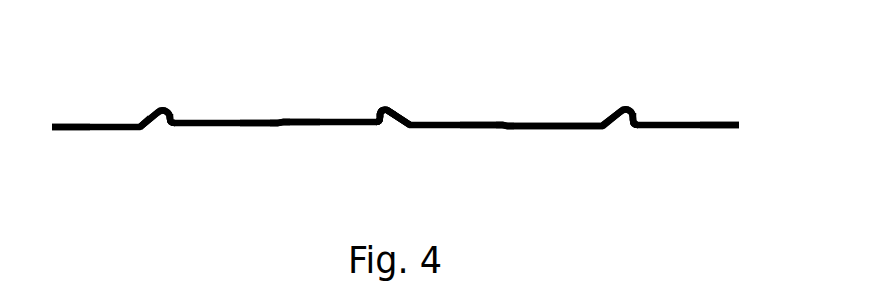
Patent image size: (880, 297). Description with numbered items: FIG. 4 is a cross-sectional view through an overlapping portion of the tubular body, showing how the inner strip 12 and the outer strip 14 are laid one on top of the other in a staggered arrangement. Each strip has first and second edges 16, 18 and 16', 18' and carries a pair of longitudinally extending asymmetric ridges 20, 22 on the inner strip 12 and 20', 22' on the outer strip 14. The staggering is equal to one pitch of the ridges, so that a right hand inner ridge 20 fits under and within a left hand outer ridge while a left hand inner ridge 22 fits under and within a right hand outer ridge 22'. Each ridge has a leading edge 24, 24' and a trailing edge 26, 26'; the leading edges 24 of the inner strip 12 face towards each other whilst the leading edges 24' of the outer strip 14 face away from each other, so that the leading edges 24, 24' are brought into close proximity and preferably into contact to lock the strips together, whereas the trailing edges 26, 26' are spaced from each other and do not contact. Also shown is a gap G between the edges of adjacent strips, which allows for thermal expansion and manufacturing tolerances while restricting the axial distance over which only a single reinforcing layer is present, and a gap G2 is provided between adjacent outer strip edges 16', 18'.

The inner strip 12 is at (210, 128).
The outer strip 14 is at (538, 119).
The first edge of inner strip 16 is at (481, 169).
The first edge of outer strip 16' is at (493, 77).
The second edge of inner strip 18 is at (71, 171).
The second edge of outer strip 18' is at (308, 83).
The ridge of inner strip 20 is at (150, 78).
The ridge of outer strip 20' is at (402, 74).
The ridge of inner strip 22 is at (376, 157).
The ridge of outer strip 22' is at (636, 74).
The leading edge of inner strip ridge 24 is at (190, 83).
The leading edge of outer strip ridge 24' is at (530, 78).
The trailing edge of inner strip ridge 26 is at (270, 163).
The trailing edge of outer strip ridge 26' is at (503, 76).
The gap G is at (507, 130).
The gap between adjacent outer strip edges G2 is at (274, 121).